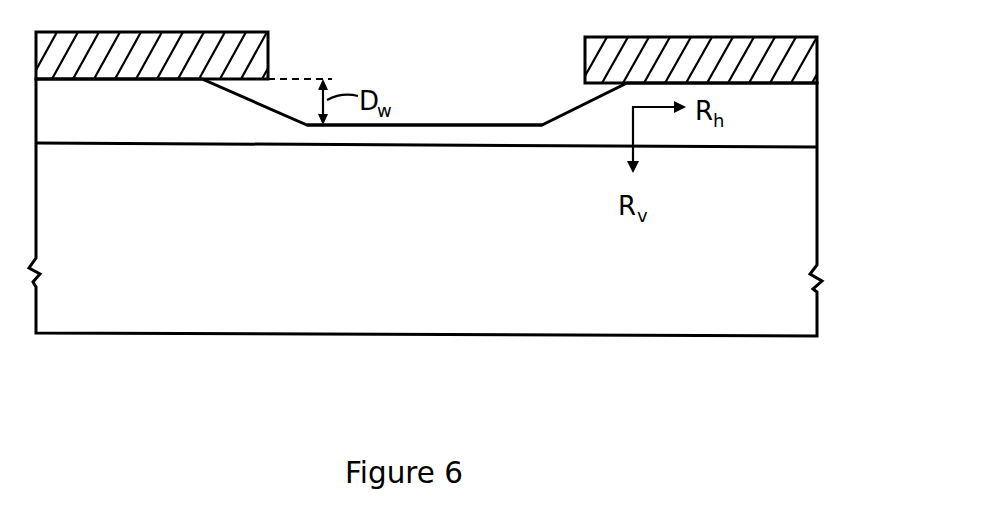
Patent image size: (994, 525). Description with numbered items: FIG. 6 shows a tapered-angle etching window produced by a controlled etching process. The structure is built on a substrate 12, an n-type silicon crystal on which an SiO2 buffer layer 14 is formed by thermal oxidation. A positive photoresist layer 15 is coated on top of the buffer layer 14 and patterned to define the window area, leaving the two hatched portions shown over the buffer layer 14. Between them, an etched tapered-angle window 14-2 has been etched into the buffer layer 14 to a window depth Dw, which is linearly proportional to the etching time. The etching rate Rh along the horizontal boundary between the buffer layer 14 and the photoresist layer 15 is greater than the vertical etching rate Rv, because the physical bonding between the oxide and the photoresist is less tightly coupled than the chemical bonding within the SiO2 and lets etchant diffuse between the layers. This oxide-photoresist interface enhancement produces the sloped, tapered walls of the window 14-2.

The substrate 12 is at (797, 320).
The buffer layer 14 is at (797, 125).
The etched tapered-angle window 14-2 is at (437, 124).
The photoresist layer 15 is at (797, 63).